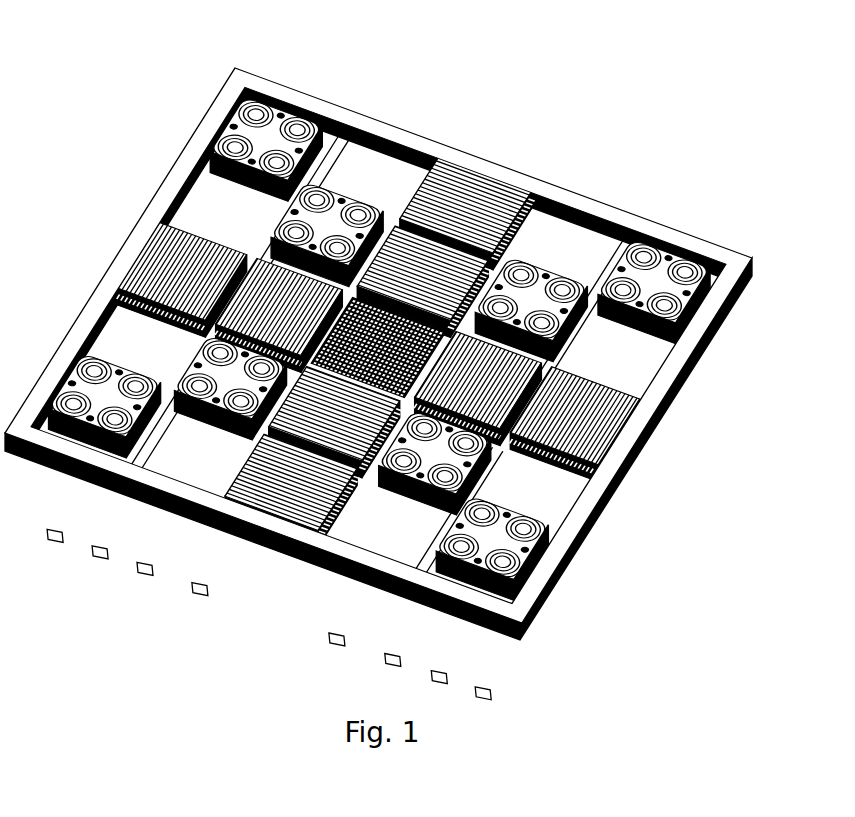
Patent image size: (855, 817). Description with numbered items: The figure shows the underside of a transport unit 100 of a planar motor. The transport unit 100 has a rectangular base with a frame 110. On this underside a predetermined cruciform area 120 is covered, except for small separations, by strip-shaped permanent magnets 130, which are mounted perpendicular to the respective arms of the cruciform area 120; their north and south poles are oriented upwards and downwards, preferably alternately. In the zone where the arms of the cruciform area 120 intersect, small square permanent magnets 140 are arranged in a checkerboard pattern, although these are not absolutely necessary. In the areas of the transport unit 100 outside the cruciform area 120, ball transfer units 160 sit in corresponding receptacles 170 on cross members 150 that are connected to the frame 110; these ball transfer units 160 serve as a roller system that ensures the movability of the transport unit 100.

The transport unit 100 is at (395, 354).
The frame 110 is at (187, 165).
The cruciform area 120 is at (650, 440).
The strip-shaped permanent magnets 130 is at (133, 235).
The small square permanent magnets 140 is at (458, 212).
The cross members 150 is at (337, 582).
The ball transfer units 160 is at (197, 387).
The receptacles 170 is at (637, 347).